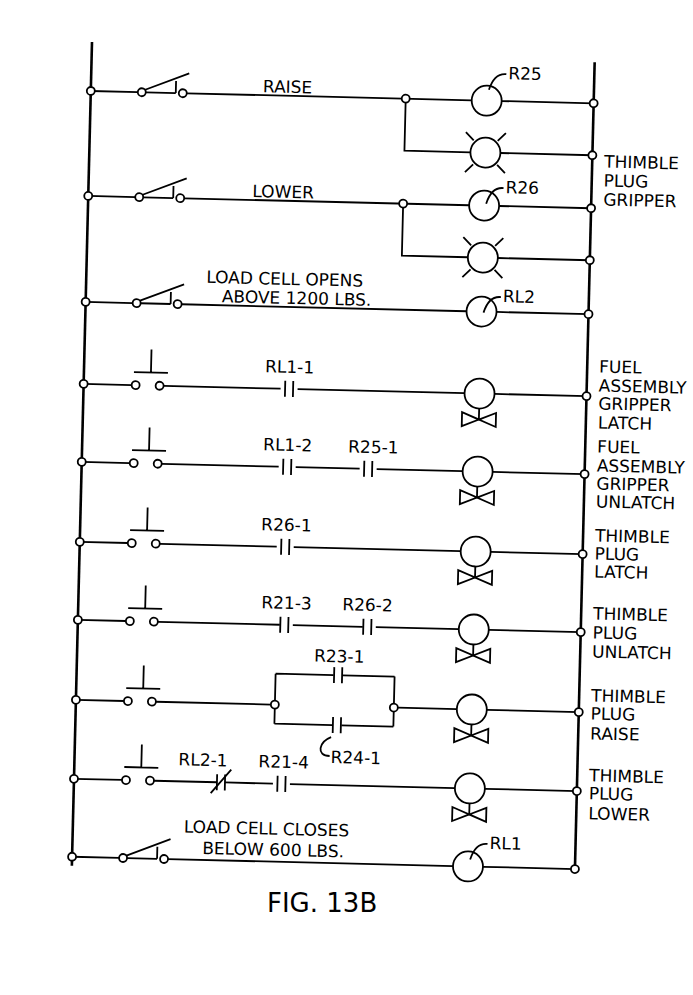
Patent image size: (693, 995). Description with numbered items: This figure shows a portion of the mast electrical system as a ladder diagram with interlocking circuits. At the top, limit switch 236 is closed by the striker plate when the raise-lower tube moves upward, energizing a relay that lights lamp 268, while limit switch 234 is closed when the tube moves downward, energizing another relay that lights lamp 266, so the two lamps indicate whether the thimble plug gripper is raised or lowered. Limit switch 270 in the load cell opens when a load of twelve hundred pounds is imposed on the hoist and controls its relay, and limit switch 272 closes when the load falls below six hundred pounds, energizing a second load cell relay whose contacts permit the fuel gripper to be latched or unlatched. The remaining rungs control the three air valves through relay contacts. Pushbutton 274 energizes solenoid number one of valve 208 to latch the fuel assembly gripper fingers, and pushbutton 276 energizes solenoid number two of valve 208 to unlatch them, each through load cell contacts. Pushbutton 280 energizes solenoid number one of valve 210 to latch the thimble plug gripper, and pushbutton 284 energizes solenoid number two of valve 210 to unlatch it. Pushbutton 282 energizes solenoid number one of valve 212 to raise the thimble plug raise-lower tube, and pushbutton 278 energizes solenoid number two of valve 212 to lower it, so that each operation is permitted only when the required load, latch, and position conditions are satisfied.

The limit switch 236 is at (163, 83).
The limit switch 234 is at (165, 185).
The lamp 268 is at (502, 137).
The lamp 266 is at (502, 242).
The limit switch 270 is at (165, 291).
The pushbutton 274 is at (160, 357).
The pushbutton 276 is at (160, 435).
The pushbutton 280 is at (160, 515).
The pushbutton 284 is at (160, 593).
The pushbutton 282 is at (160, 673).
The pushbutton 278 is at (160, 749).
The limit switch 272 is at (165, 846).
The valve 208 is at (499, 373).
The valve 210 is at (499, 531).
The valve 212 is at (499, 689).